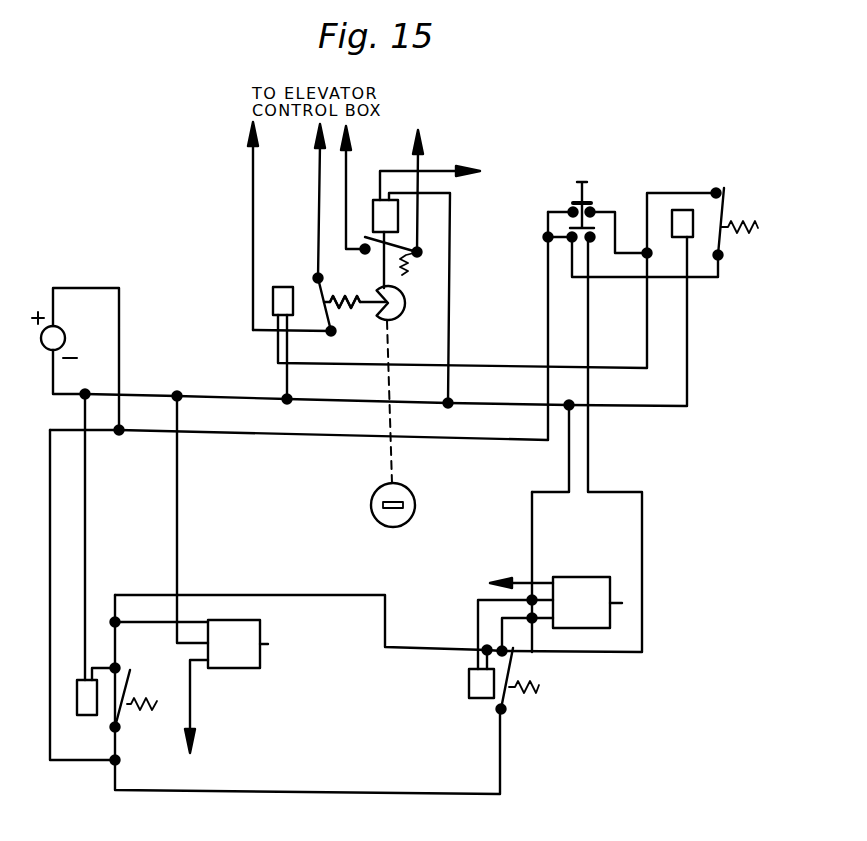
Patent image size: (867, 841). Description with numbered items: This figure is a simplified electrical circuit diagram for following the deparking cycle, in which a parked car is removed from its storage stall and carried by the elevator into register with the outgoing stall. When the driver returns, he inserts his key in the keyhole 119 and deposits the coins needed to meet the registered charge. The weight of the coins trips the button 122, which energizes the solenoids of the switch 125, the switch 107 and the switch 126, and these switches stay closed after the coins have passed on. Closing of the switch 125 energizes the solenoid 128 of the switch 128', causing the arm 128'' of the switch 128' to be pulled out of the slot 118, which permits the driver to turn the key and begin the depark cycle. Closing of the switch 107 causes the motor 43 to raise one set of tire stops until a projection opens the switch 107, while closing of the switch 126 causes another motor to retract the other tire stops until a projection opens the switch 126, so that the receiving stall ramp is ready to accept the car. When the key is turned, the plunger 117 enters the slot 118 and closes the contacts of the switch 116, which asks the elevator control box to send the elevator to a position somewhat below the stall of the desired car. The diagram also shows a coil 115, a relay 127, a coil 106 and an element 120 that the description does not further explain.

The motor 43 is at (238, 644).
The relay coil 106 is at (87, 715).
The switch 107 is at (131, 680).
The relay coil 115 is at (381, 208).
The switch 116 is at (400, 249).
The plunger 117 is at (383, 269).
The slot 118 is at (407, 292).
The keyhole 119 is at (406, 496).
The cam 120 is at (397, 316).
The button 122 is at (596, 174).
The switch 125 is at (725, 215).
The switch 126 is at (511, 672).
The relay 127 is at (550, 623).
The solenoid 128 is at (279, 282).
The switch 128' is at (299, 271).
The arm 128'' is at (353, 327).